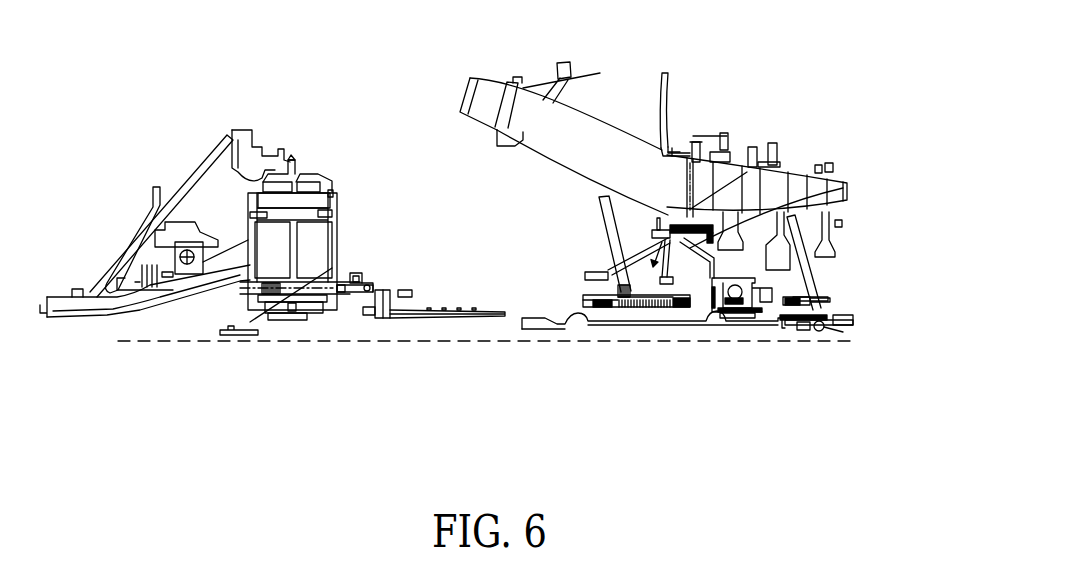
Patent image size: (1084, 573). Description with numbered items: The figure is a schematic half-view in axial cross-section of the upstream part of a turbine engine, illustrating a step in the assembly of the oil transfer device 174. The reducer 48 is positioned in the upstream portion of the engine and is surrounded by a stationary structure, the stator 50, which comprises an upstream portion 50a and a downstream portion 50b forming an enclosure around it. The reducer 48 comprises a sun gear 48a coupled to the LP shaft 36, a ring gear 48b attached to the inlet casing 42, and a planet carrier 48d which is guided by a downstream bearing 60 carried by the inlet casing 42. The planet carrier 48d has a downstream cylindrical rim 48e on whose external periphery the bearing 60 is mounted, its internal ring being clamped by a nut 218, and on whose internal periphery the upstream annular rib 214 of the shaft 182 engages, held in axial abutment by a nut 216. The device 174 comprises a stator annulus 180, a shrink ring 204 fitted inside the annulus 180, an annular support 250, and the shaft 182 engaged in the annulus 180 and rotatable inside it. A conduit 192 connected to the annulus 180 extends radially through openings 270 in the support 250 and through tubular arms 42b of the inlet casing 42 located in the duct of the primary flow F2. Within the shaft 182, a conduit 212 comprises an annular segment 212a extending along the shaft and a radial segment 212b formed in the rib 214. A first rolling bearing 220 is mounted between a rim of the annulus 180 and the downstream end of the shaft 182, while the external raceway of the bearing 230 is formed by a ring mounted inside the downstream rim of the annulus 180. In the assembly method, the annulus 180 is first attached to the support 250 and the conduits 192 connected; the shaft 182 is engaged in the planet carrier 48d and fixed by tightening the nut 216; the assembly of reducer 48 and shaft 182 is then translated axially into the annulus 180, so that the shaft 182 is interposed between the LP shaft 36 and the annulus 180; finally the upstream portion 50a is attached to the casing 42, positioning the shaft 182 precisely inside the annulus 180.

The LP shaft 36 is at (632, 328).
The inlet casing 42 is at (679, 117).
The tubular arms 42b is at (603, 137).
The reducer 48 is at (304, 269).
The sun gear 48a is at (277, 313).
The ring gear 48b is at (310, 192).
The planet carrier 48d is at (250, 322).
The downstream cylindrical rim 48e is at (303, 300).
The stator 50 is at (459, 195).
The upstream portion 50a is at (200, 188).
The downstream portion 50b is at (843, 188).
The bearing 60 is at (358, 266).
The oil transfer device 174 is at (577, 297).
The stator annulus 180 is at (691, 313).
The shaft 182 is at (481, 326).
The conduit 192 is at (614, 212).
The shrink ring 204 is at (662, 316).
The conduit 212 is at (422, 373).
The annular segment 212a is at (413, 318).
The radial segment 212b is at (370, 318).
The upstream annular rib 214 is at (345, 296).
The nut 216 is at (412, 290).
The nut 218 is at (366, 281).
The first rolling bearing 220 is at (645, 308).
The bearing 230 is at (603, 316).
The annular support 250 is at (752, 165).
The openings 270 is at (606, 252).
The primary flow F2 is at (520, 119).